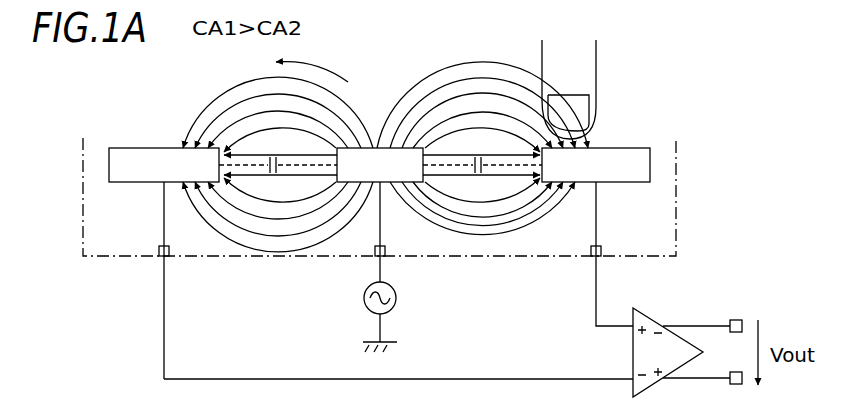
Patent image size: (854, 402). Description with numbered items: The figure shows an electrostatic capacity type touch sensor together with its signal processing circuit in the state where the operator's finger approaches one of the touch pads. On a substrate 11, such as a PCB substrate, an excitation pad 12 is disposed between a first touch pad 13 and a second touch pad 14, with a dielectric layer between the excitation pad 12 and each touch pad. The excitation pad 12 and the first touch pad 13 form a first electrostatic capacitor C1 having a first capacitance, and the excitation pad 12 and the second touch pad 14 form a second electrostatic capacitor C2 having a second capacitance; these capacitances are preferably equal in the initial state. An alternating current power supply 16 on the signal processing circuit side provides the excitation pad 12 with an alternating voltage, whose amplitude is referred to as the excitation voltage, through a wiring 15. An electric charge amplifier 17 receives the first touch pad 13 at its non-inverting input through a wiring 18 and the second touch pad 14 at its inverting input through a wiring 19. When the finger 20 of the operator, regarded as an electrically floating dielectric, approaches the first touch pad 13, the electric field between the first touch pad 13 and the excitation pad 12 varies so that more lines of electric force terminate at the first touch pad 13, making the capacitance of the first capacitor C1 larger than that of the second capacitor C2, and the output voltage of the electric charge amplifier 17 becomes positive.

The substrate 11 is at (668, 222).
The excitation pad 12 is at (385, 175).
The first touch pad 13 is at (625, 175).
The second touch pad 14 is at (135, 175).
The wiring 15 is at (378, 272).
The alternating current power supply 16 is at (400, 300).
The electric charge amplifier 17 is at (657, 318).
The wiring 18 is at (596, 299).
The wiring 19 is at (523, 378).
The finger 20 is at (588, 63).
The first electrostatic capacitor C1 is at (482, 148).
The second electrostatic capacitor C2 is at (278, 157).